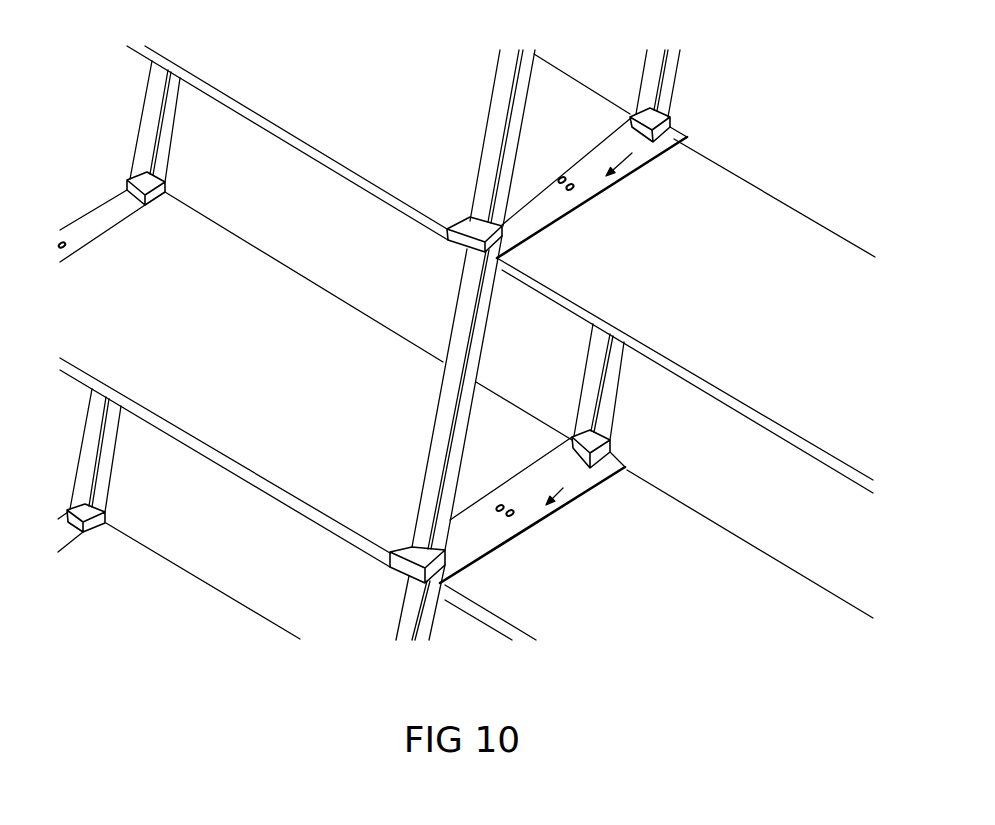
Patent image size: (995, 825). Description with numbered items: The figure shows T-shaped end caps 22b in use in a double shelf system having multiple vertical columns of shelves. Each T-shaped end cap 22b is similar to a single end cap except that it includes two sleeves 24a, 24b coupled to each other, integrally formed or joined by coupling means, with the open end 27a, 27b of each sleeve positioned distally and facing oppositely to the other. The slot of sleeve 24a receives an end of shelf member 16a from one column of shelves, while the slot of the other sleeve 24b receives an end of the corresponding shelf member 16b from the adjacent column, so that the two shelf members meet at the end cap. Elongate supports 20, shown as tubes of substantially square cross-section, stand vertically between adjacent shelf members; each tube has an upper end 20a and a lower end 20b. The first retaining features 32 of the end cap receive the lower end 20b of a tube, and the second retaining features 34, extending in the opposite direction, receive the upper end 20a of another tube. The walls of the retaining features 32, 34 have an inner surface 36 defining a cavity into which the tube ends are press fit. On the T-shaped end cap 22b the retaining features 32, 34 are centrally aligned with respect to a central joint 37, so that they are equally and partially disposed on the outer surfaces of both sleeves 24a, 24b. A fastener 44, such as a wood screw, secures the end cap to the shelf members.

The shelf member 16a is at (775, 232).
The shelf member 16b is at (552, 78).
The elongate support 20 is at (411, 340).
The upper end 20a is at (480, 327).
The lower end 20b is at (674, 70).
The T-shaped end cap 22b is at (575, 321).
The sleeve 24a is at (588, 188).
The sleeve 24b is at (593, 148).
The open end 27a is at (578, 212).
The open end 27b is at (593, 152).
The first retaining feature 32 is at (665, 128).
The second retaining feature 34 is at (463, 267).
The inner surface 36 is at (522, 230).
The central joint 37 is at (522, 192).
The fastener 44 is at (556, 179).